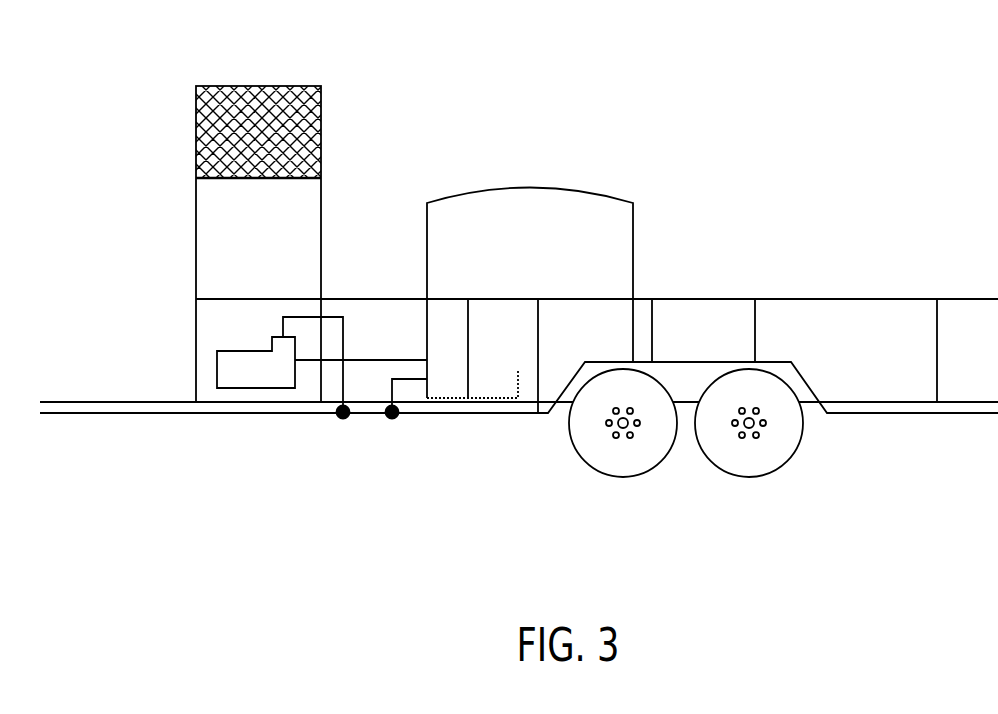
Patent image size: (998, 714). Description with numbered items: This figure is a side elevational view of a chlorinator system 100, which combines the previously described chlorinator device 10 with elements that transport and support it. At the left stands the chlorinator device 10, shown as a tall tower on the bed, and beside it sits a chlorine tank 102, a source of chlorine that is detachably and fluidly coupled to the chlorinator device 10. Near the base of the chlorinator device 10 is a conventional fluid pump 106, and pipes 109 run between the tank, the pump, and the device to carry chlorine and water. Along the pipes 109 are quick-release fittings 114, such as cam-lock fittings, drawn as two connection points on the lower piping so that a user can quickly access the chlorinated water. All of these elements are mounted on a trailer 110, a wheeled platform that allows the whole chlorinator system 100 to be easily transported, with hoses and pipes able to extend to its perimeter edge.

The chlorinator system 100 is at (850, 79).
The chlorinator device 10 is at (140, 236).
The chlorine tank 102 is at (530, 208).
The fluid pump 106 is at (255, 378).
The pipes 109 is at (372, 360).
The quick-release fittings 114 is at (392, 412).
The trailer 110 is at (868, 410).